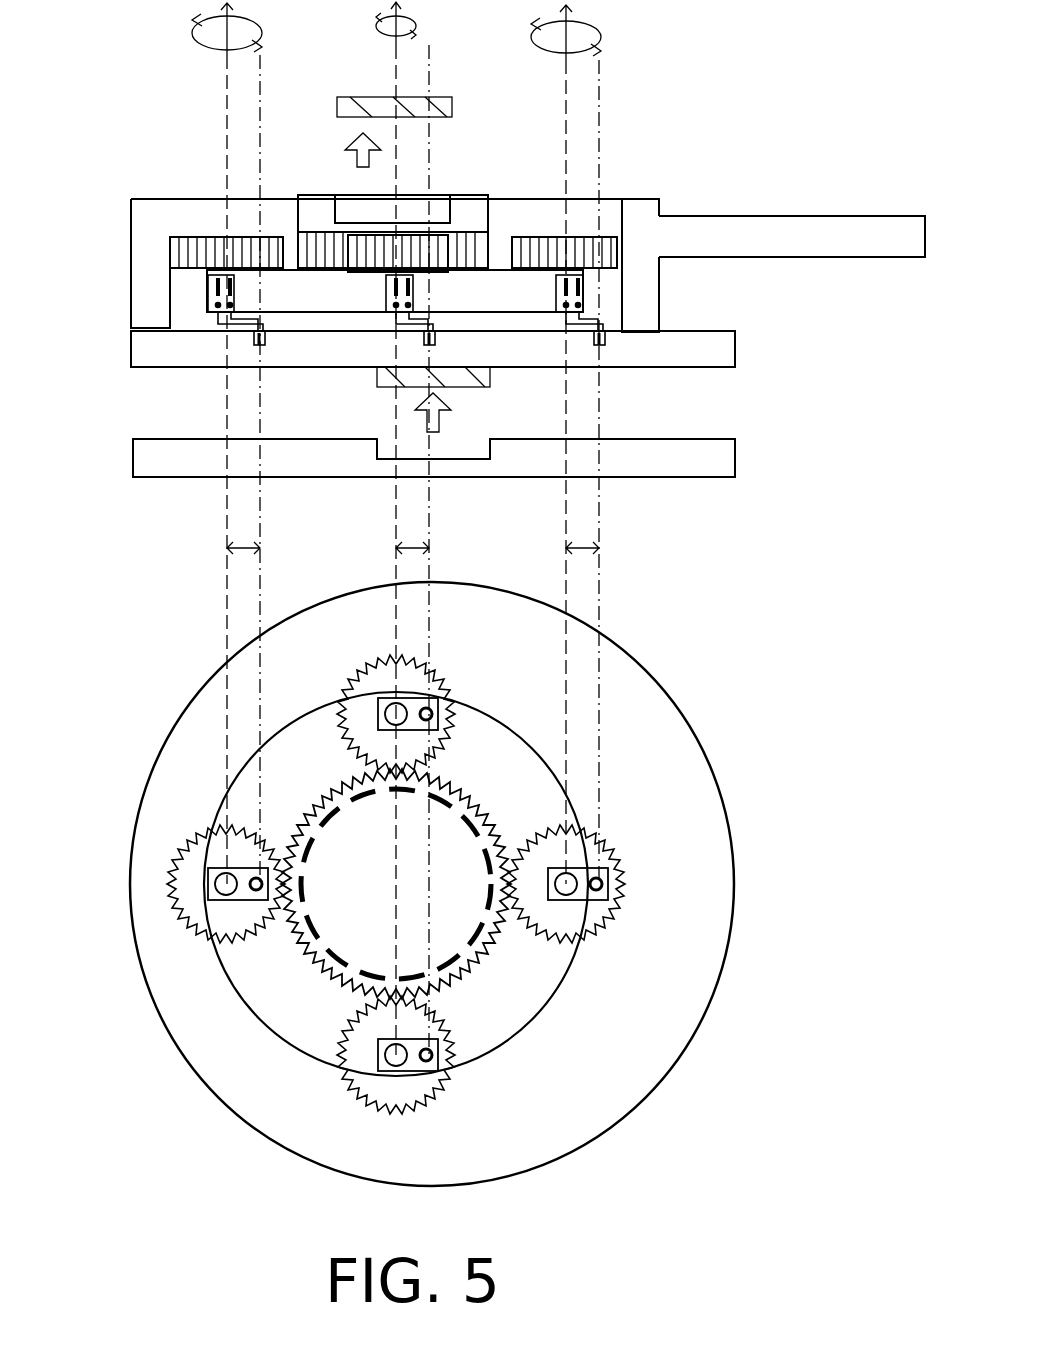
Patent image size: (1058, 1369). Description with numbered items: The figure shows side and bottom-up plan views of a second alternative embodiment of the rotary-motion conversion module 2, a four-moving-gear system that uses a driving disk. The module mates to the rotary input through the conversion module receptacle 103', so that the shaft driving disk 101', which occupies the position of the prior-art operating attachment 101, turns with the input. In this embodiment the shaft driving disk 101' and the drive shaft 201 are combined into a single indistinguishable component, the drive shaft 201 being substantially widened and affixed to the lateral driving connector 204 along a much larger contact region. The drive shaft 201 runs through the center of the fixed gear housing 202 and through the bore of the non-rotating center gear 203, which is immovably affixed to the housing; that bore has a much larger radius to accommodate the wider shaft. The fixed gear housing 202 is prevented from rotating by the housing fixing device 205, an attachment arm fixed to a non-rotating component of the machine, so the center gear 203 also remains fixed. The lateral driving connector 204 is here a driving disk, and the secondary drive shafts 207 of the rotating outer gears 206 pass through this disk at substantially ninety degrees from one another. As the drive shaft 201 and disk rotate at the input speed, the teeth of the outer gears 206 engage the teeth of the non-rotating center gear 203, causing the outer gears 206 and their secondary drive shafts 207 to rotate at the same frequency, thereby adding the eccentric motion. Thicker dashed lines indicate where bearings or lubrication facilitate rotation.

The rotary-motion conversion module 2 is at (738, 141).
The operating attachment 101 is at (470, 812).
The shaft driving disk 101' is at (384, 189).
The conversion module receptacle 103' is at (414, 189).
The drive shaft 201 is at (457, 232).
The fixed gear housing 202 is at (190, 231).
The non-rotating center gear 203 is at (297, 258).
The lateral driving connector 204 is at (351, 304).
The housing fixing device 205 is at (760, 252).
The rotating outer gears 206 is at (220, 252).
The secondary drive shafts 207 is at (220, 293).